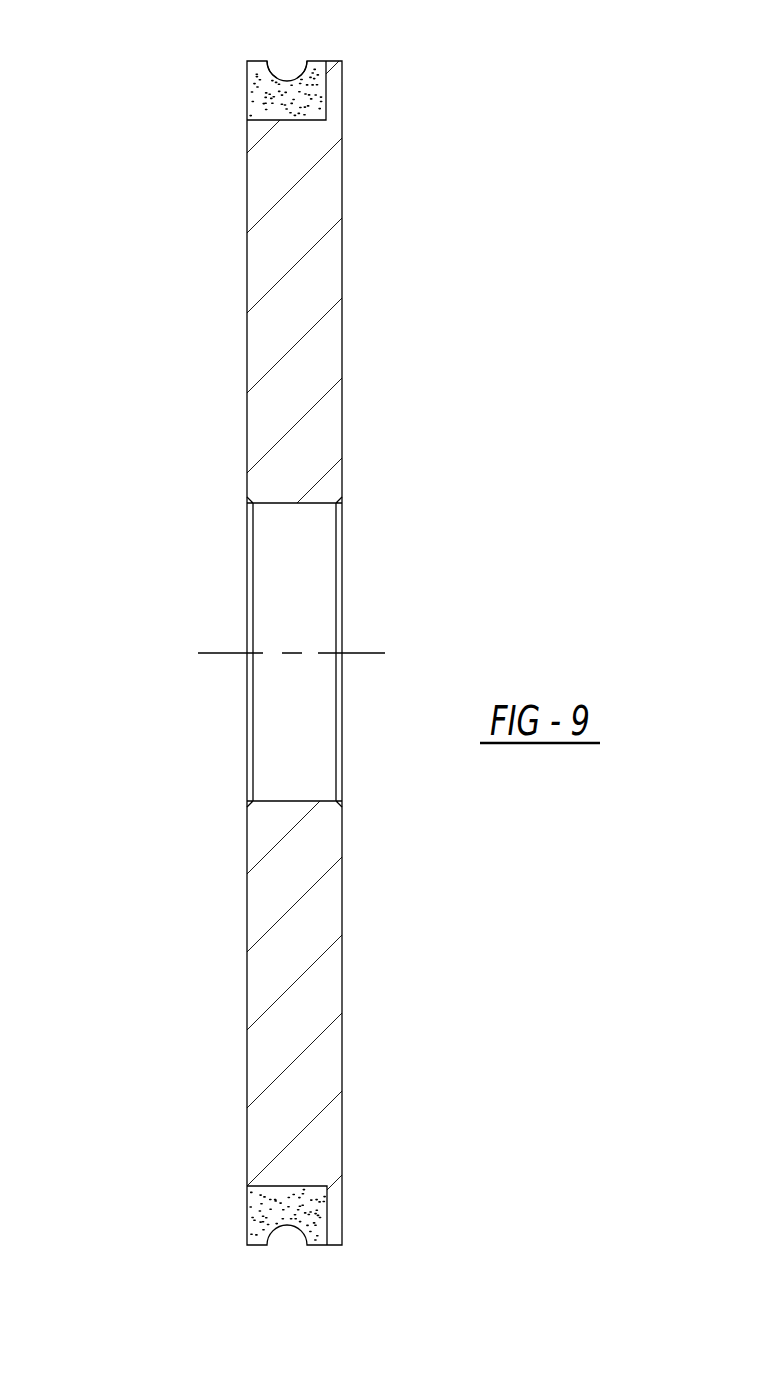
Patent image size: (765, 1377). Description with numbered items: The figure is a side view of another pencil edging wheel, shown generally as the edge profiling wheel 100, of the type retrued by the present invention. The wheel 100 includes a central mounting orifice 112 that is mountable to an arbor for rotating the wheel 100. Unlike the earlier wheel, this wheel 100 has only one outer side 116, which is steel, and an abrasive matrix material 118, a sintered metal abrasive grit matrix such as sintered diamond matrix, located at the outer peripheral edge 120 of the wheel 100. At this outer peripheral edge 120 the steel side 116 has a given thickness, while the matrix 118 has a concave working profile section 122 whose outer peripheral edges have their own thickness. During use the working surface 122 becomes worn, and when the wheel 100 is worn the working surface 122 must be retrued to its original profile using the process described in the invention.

The edge profiling wheel 100 is at (122, 176).
The central mounting orifice 112 is at (334, 520).
The outer side 116 is at (342, 92).
The abrasive matrix material 118 is at (307, 108).
The outer peripheral edge 120 is at (327, 64).
The concave working profile section 122 is at (271, 72).